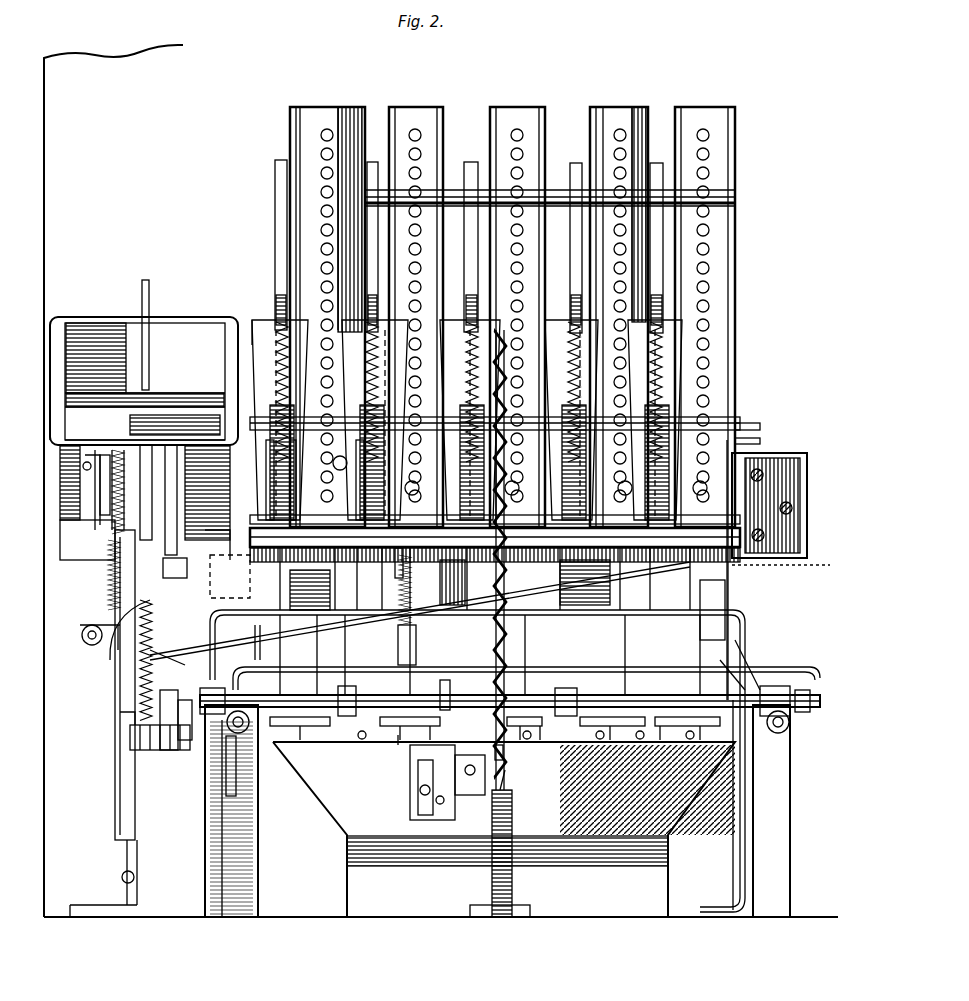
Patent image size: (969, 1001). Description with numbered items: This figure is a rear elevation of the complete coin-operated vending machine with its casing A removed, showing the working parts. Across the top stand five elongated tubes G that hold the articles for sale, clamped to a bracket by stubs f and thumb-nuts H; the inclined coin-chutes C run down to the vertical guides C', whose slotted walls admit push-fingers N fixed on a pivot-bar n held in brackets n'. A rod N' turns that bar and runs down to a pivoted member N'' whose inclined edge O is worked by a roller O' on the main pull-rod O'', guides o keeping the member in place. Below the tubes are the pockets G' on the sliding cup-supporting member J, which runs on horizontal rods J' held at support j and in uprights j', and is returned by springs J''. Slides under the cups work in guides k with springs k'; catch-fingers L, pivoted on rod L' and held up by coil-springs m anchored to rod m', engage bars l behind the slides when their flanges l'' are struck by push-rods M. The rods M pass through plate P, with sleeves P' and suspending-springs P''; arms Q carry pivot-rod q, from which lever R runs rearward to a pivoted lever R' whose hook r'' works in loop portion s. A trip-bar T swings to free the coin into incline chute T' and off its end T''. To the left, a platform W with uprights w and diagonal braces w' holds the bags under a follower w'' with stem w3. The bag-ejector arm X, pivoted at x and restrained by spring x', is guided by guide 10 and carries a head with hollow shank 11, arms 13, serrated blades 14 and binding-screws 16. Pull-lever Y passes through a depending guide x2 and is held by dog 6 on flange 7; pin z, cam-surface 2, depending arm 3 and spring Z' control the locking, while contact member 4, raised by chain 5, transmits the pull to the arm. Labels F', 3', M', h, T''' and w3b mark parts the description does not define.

The casing A is at (92, 179).
The elongated tubes G is at (512, 388).
The inclined coin-chutes C is at (453, 234).
The vertical coin guides C' is at (498, 409).
The spring F' is at (520, 432).
The flanges l'' is at (319, 480).
The bars l is at (266, 480).
The thumb-nuts H is at (495, 448).
The pivot-bar n is at (757, 425).
The brackets n' is at (762, 442).
The arms Q is at (495, 547).
The adjustable sleeves P' is at (495, 543).
The suspending-springs P'' is at (225, 333).
The plate P is at (746, 360).
The platform W is at (120, 410).
The uprights w is at (145, 357).
The diagonal braces w' is at (74, 363).
The stem w3 is at (150, 293).
The follower w'' is at (145, 380).
The serrated contact-blades 14 is at (97, 445).
The hollow shank 11 is at (87, 502).
The guide 10 is at (85, 520).
The arms 13 is at (100, 507).
The binding-screws 16 is at (85, 470).
The inclined edge O is at (185, 492).
The depending guide x2 is at (137, 492).
The dog 6 is at (170, 540).
The pull-lever Y is at (169, 571).
The flange 7 is at (217, 539).
The spring x' is at (99, 575).
The chute end T'' is at (115, 629).
The spring Z' is at (117, 660).
The bag-ejector arm X is at (115, 765).
The pivot x is at (110, 875).
The pivoted contact member 4 is at (167, 654).
The depending arm 3 is at (138, 737).
The arm 3' is at (110, 714).
The pin z is at (161, 731).
The cam-surface 2 is at (175, 752).
The stubs f is at (781, 509).
The trip-bar T is at (468, 676).
The incline chute T' is at (230, 576).
The lever R is at (420, 609).
The pivoted lever R' is at (456, 692).
The push-rods M is at (465, 595).
The frame post M' is at (699, 610).
The rod N' is at (417, 590).
The push-fingers N is at (423, 623).
The pivot-rod q is at (391, 563).
The chain 5 is at (255, 650).
The coil-springs m is at (526, 663).
The rod m' is at (748, 661).
The pockets G' is at (748, 652).
The catch-fingers L is at (502, 690).
The rod L' is at (795, 693).
The springs k' is at (501, 747).
The guides k is at (646, 705).
The roller h is at (698, 741).
The cup-supporting member J is at (497, 811).
The rods J' is at (214, 743).
The springs J'' is at (513, 729).
The support j is at (232, 818).
The uprights j' is at (809, 811).
The base T''' is at (504, 829).
The roller O' is at (496, 623).
The main pull-rod O'' is at (491, 779).
The pivoted member N'' is at (413, 782).
The guides o is at (440, 805).
The loop portion s is at (510, 780).
The hook r'' is at (506, 755).
The rod w3b is at (401, 750).